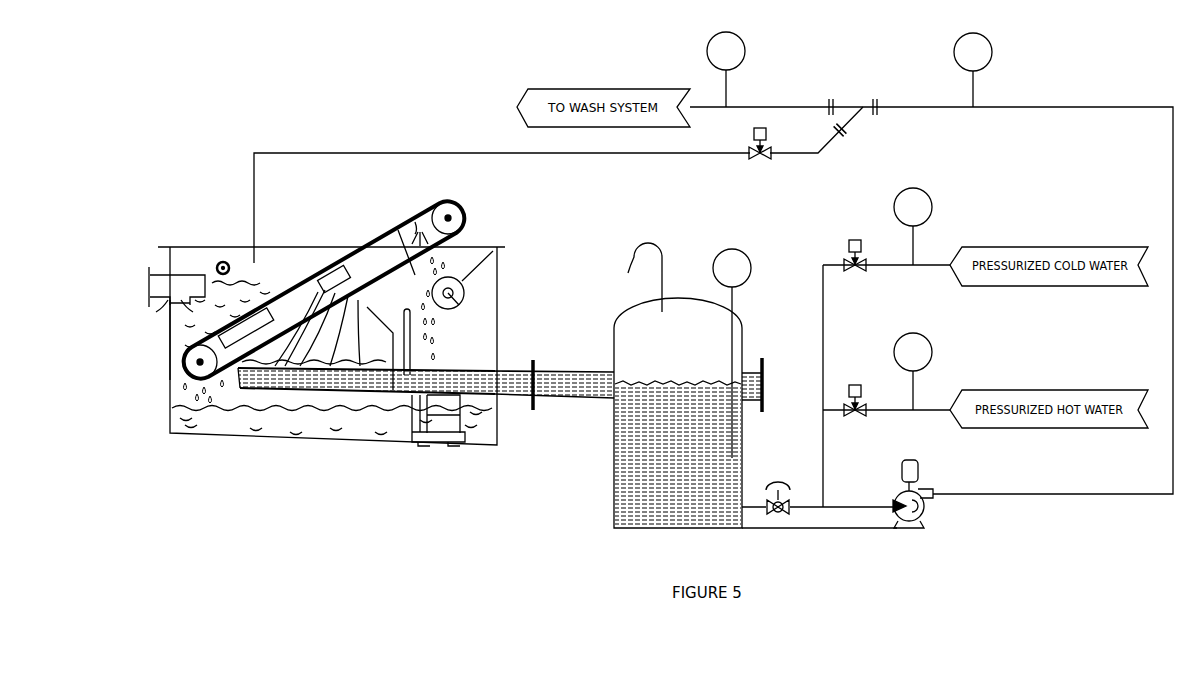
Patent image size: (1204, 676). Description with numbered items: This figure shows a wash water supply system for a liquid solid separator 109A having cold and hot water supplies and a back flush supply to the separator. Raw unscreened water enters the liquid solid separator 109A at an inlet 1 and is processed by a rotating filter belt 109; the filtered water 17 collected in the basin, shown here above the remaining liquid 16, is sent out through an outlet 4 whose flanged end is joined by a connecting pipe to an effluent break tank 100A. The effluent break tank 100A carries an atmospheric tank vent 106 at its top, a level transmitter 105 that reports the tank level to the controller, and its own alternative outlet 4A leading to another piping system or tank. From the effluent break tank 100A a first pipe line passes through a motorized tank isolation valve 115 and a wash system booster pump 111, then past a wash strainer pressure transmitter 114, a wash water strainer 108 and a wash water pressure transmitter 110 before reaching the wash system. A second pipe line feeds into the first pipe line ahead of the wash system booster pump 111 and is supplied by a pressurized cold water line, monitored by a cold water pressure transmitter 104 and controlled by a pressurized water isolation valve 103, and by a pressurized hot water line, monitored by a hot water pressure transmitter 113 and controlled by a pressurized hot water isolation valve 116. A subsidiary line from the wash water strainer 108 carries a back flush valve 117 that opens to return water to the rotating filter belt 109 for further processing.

The inlet 1 is at (148, 287).
The outlet 4 is at (535, 362).
The alternative outlet 4A is at (745, 368).
The wash liquid 16 is at (258, 421).
The filtered water 17 is at (318, 388).
The effluent break tank 100A is at (613, 482).
The pressurized water isolation valve 103 is at (862, 270).
The cold water pressure transmitter 104 is at (928, 196).
The level transmitter 105 is at (748, 256).
The atmospheric tank vent 106 is at (648, 253).
The wash water strainer 108 is at (857, 100).
The rotating filter belt 109 is at (215, 248).
The liquid solid separator 109A is at (170, 332).
The wash water pressure transmitter 110 is at (742, 40).
The wash system booster pump 111 is at (926, 512).
The hot water pressure transmitter 113 is at (928, 340).
The wash strainer pressure transmitter 114 is at (988, 40).
The tank isolation valve 115 is at (790, 513).
The pressurized hot water isolation valve 116 is at (862, 415).
The back flush valve 117 is at (766, 158).